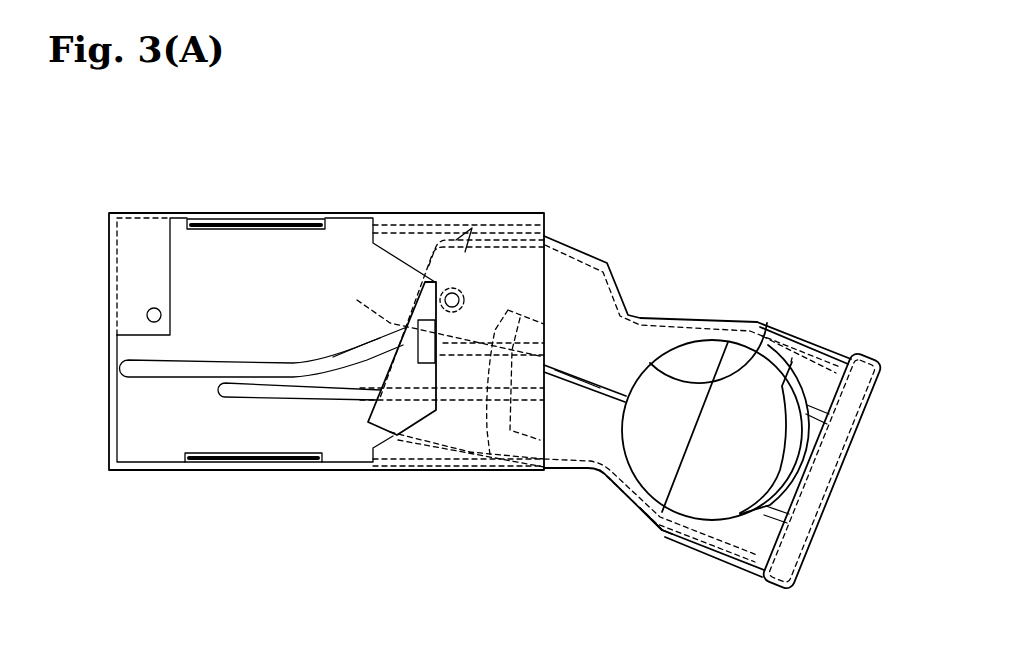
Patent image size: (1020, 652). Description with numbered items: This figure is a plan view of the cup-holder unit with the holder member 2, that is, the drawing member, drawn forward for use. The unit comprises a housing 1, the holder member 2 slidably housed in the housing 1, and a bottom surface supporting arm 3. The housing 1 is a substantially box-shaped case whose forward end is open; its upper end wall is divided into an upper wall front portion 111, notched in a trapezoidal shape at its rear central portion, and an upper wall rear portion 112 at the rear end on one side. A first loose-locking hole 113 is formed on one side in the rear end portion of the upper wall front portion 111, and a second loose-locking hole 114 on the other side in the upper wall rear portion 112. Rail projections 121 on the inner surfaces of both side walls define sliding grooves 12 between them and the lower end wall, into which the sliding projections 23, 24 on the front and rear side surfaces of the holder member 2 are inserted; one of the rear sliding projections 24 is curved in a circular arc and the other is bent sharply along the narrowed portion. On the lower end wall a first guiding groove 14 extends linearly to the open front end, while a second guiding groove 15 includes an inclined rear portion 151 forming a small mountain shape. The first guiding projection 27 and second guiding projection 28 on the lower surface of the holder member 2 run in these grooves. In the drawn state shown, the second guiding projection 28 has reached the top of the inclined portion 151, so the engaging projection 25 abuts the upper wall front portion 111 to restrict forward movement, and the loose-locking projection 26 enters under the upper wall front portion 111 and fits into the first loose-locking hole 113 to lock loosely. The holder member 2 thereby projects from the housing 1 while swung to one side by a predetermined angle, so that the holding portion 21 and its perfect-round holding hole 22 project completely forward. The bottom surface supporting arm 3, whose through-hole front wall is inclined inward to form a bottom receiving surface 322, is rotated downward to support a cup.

The housing 1 is at (138, 434).
The upper wall rear portion 112 is at (143, 237).
The second loose-locking hole 114 is at (147, 313).
The rail projections 121 is at (250, 220).
The second guiding groove 15 is at (133, 370).
The inclined rear portion 151 is at (357, 347).
The first guiding groove 14 is at (277, 400).
The engaging projection 25 is at (370, 433).
The loose-locking projection 26 is at (455, 288).
The first loose-locking hole 113 is at (462, 293).
The upper wall front portion 111 is at (465, 252).
The sliding grooves 12 is at (395, 220).
The second guiding projection 28 is at (357, 300).
The first guiding projection 27 is at (495, 466).
The sliding projections 24 is at (592, 255).
The bottom surface supporting arm 3 is at (577, 413).
The bottom receiving surface 322 is at (655, 527).
The sliding projections 23 is at (800, 335).
The holder member 2 is at (697, 320).
The holding hole 22 is at (767, 327).
The holding portion 21 is at (852, 405).